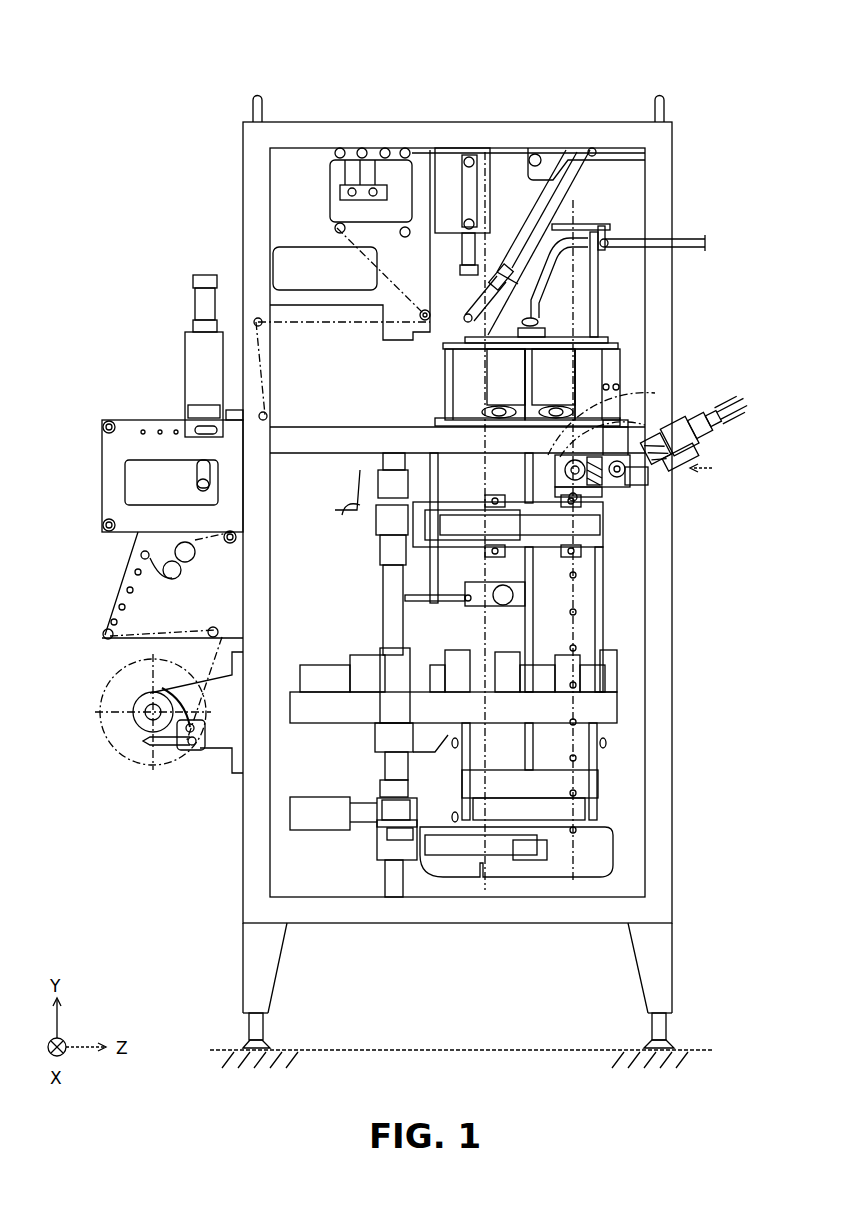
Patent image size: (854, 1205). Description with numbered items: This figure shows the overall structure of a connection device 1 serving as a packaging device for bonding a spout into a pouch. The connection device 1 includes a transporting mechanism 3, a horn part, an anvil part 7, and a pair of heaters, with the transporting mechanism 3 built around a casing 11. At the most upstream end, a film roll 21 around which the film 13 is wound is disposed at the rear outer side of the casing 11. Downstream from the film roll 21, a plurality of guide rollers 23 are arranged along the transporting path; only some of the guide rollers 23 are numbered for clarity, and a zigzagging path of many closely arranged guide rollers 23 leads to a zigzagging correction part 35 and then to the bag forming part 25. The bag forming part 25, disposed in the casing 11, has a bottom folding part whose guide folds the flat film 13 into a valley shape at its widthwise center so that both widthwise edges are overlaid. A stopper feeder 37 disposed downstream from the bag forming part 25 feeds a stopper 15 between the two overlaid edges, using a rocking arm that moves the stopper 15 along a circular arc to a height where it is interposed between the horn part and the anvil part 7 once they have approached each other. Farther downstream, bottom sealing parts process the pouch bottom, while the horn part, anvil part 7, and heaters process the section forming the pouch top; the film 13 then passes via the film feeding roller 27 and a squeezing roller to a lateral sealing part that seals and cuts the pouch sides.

The connection device 1 is at (181, 47).
The casing 11 is at (312, 133).
The film 13 is at (494, 148).
The guide rollers 23 is at (340, 153).
The zigzagging correction part 35 is at (482, 185).
The bag forming part 25 is at (578, 208).
The anvil part 7 is at (570, 455).
The stopper feeder 37 is at (640, 440).
The stopper 15 is at (580, 575).
The transporting mechanism 3 is at (610, 648).
The film feeding roller 27 is at (590, 700).
The film roll 21 is at (150, 768).